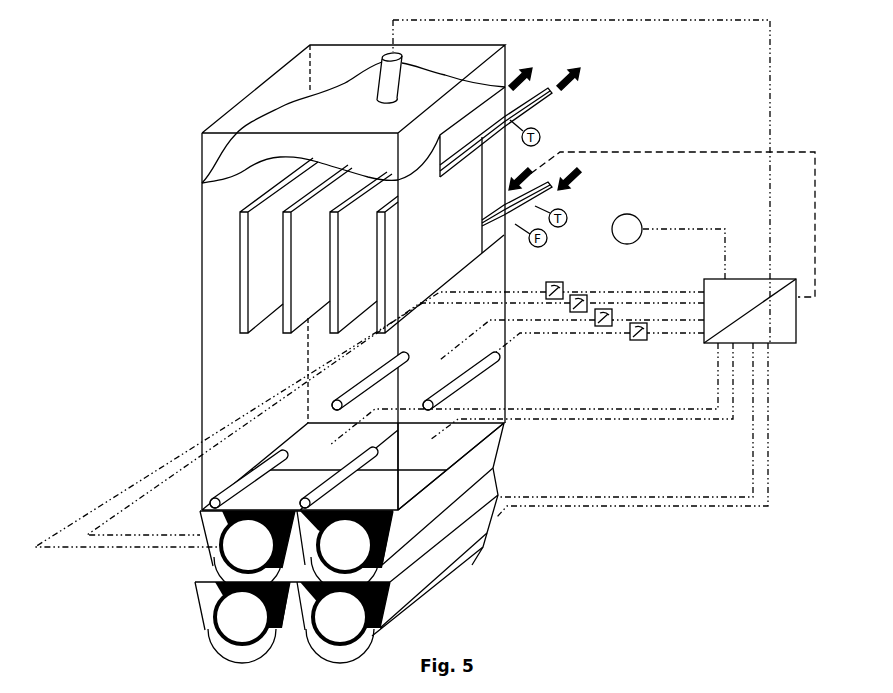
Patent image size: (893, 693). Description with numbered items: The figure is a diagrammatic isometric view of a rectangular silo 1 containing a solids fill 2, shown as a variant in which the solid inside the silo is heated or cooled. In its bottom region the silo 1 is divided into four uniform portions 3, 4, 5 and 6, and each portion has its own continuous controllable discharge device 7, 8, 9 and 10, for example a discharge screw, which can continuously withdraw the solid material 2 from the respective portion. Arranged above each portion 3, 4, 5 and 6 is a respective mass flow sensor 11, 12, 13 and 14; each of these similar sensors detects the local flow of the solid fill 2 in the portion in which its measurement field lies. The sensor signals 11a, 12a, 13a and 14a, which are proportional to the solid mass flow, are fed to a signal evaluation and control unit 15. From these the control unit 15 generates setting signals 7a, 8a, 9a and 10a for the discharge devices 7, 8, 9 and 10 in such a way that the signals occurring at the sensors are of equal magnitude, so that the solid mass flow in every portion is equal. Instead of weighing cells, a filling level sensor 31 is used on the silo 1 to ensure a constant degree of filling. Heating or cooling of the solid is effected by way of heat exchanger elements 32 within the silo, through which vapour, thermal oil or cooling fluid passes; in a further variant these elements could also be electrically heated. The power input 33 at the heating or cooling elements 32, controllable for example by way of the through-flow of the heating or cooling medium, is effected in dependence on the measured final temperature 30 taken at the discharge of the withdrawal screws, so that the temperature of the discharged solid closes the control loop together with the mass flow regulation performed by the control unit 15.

The silo 1 is at (202, 180).
The solids fill 2 is at (348, 92).
The portion 3 is at (202, 514).
The portion 4 is at (405, 490).
The portion 5 is at (302, 437).
The portion 6 is at (497, 431).
The controllable discharge device 7 is at (212, 565).
The controllable discharge device 8 is at (352, 551).
The controllable discharge device 9 is at (213, 622).
The controllable discharge device 10 is at (372, 627).
The mass flow sensor 11 is at (232, 487).
The mass flow sensor 12 is at (325, 483).
The mass flow sensor 13 is at (348, 392).
The mass flow sensor 14 is at (497, 360).
The signal evaluation and control unit 15 is at (773, 326).
The measured final temperature 30 is at (638, 220).
The filling level sensor 31 is at (390, 55).
The heat exchanger element 32 is at (244, 262).
The power input 33 is at (815, 228).
The setting signal 7a is at (558, 409).
The setting signal 8a is at (574, 420).
The setting signal 9a is at (613, 496).
The setting signal 10a is at (635, 508).
The sensor signal 11a is at (578, 295).
The sensor signal 12a is at (551, 282).
The sensor signal 13a is at (603, 328).
The sensor signal 14a is at (640, 342).